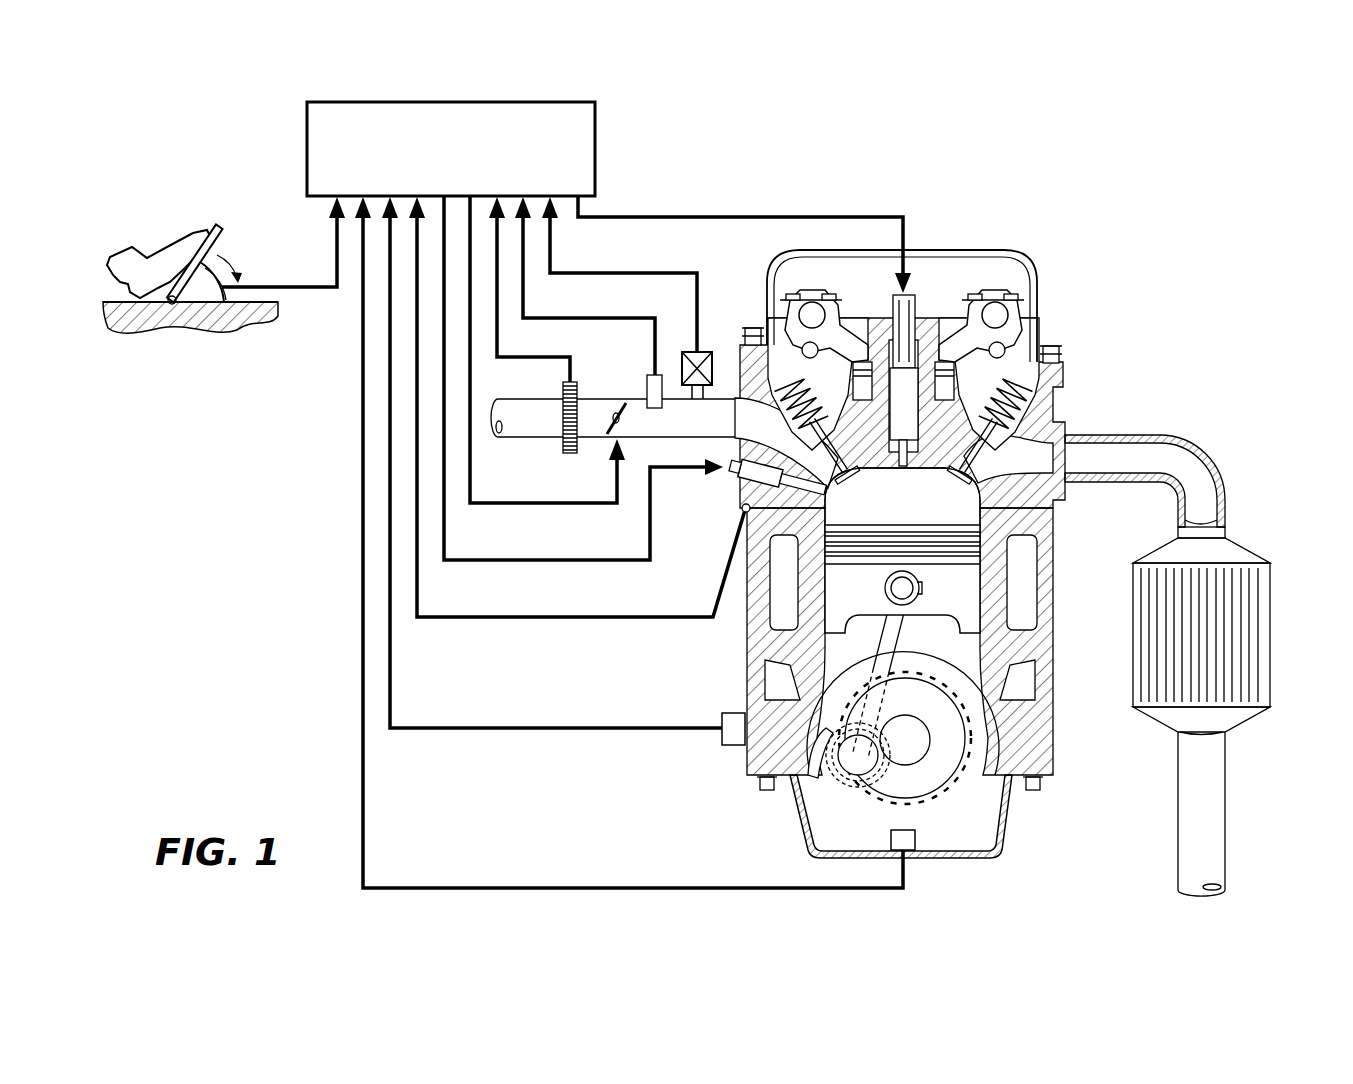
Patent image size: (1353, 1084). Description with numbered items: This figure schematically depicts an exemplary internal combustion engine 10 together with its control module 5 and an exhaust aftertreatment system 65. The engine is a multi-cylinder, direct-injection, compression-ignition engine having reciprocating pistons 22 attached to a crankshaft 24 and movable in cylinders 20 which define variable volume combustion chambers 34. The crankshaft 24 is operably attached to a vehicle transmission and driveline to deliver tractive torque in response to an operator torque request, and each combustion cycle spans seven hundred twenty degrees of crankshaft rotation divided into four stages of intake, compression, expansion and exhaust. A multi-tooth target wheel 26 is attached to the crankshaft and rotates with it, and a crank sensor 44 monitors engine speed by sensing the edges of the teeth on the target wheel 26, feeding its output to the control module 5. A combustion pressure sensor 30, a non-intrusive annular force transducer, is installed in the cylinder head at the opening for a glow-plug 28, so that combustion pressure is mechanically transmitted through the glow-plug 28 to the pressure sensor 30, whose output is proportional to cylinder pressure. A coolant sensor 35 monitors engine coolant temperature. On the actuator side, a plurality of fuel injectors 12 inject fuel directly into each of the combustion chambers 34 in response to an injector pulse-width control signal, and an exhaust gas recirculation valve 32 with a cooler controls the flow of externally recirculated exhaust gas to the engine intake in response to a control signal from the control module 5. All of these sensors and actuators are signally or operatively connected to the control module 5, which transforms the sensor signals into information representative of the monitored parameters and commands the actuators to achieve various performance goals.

The control module 5 is at (571, 112).
The internal combustion engine 10 is at (915, 554).
The fuel injectors 12 is at (915, 300).
The cylinders 20 is at (1050, 503).
The pistons 22 is at (902, 579).
The crankshaft 24 is at (980, 743).
The multi-tooth target wheel 26 is at (947, 757).
The glow-plug 28 is at (680, 470).
The combustion pressure sensor 30 is at (680, 618).
The exhaust gas recirculation valve 32 is at (705, 350).
The combustion chambers 34 is at (902, 496).
The coolant sensor 35 is at (682, 730).
The crank sensor 44 is at (912, 840).
The exhaust aftertreatment system 65 is at (1236, 562).